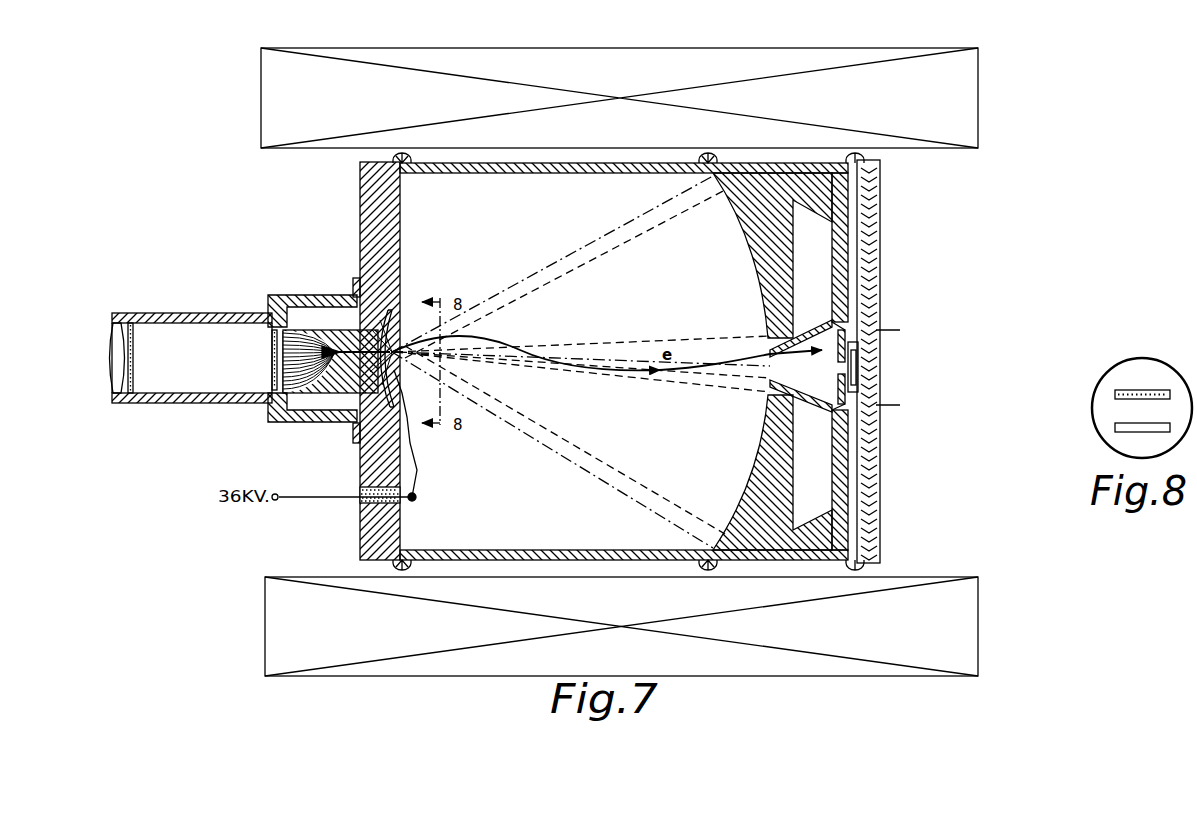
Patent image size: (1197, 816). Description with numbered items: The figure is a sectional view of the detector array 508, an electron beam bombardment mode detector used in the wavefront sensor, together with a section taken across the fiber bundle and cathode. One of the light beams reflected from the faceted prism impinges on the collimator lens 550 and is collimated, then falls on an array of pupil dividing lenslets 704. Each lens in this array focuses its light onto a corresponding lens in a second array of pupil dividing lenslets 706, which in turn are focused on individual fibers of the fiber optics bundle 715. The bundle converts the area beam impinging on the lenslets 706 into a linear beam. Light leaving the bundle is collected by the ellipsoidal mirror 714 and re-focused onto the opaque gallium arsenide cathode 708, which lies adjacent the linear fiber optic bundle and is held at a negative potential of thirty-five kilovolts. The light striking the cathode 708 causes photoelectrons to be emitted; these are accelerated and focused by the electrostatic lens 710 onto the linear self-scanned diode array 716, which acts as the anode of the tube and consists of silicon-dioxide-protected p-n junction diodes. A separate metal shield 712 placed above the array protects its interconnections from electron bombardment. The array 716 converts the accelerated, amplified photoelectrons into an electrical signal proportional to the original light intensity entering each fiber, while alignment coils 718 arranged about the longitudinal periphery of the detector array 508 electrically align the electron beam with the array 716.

In FIG. 7, the detector array 508 is at (889, 220).
In FIG. 7, the collimator lens 550 is at (114, 367).
In FIG. 7, the pupil dividing lenslets 704 is at (233, 292).
In FIG. 7, the pupil dividing lenslets 706 is at (262, 328).
In FIG. 7, the opaque gallium arsenide cathode 708 is at (372, 382).
In FIG. 8, the opaque gallium arsenide cathode 708 is at (1115, 428).
In FIG. 7, the electrostatic lens 710 is at (768, 390).
In FIG. 7, the metal shield 712 is at (783, 344).
In FIG. 7, the ellipsoidal mirror 714 is at (740, 213).
In FIG. 7, the fiber optics bundle 715 is at (394, 352).
In FIG. 8, the fiber optics bundle 715 is at (1115, 393).
In FIG. 7, the linear self-scanned diode array 716 is at (860, 365).
In FIG. 7, the alignment coils 718 is at (905, 580).